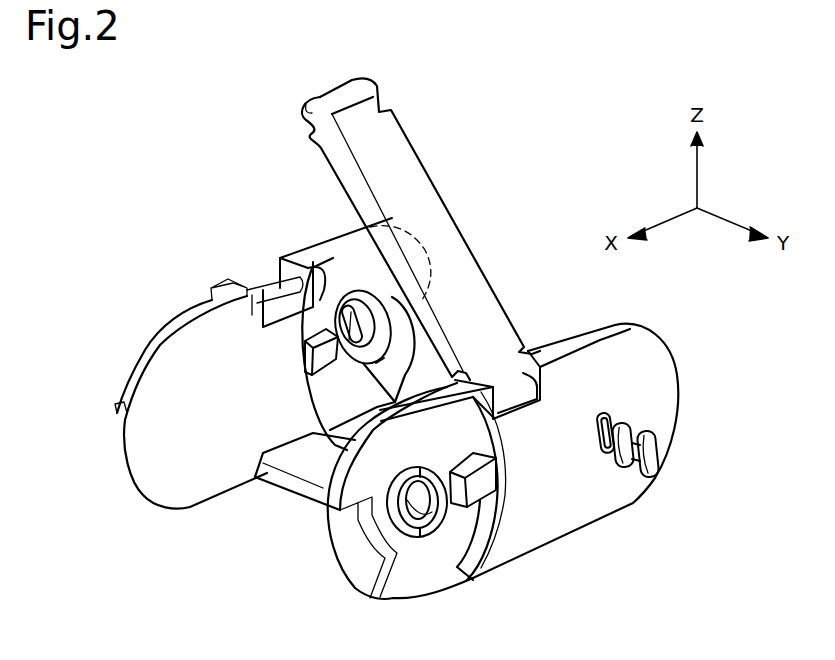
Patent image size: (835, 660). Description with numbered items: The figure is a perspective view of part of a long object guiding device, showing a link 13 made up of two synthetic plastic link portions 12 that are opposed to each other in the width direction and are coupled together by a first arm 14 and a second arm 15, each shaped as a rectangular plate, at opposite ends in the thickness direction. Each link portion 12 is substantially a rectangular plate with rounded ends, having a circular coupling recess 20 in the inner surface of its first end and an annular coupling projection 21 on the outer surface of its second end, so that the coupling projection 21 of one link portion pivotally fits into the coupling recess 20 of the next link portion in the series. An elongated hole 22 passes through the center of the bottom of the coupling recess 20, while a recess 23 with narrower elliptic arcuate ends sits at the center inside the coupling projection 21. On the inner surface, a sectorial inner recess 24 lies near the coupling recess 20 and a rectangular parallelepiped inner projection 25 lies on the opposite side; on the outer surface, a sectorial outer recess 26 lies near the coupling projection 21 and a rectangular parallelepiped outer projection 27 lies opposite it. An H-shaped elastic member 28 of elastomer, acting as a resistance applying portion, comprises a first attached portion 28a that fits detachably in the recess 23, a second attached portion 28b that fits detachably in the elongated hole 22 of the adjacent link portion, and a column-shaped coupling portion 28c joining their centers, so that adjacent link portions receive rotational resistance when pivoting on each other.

The link portion 12 is at (143, 347).
The link 13 is at (156, 314).
The first arm 14 is at (410, 137).
The second arm 15 is at (283, 488).
The coupling recess 20 is at (368, 303).
The coupling projection 21 is at (423, 537).
The elongated hole 22 is at (356, 305).
The recess 23 is at (432, 513).
The inner recess 24 is at (400, 335).
The inner projection 25 is at (316, 358).
The outer recess 26 is at (348, 562).
The outer projection 27 is at (485, 480).
The elastic member 28 is at (658, 458).
The first attached portion 28a is at (632, 422).
The second attached portion 28b is at (660, 446).
The coupling portion 28c is at (632, 457).